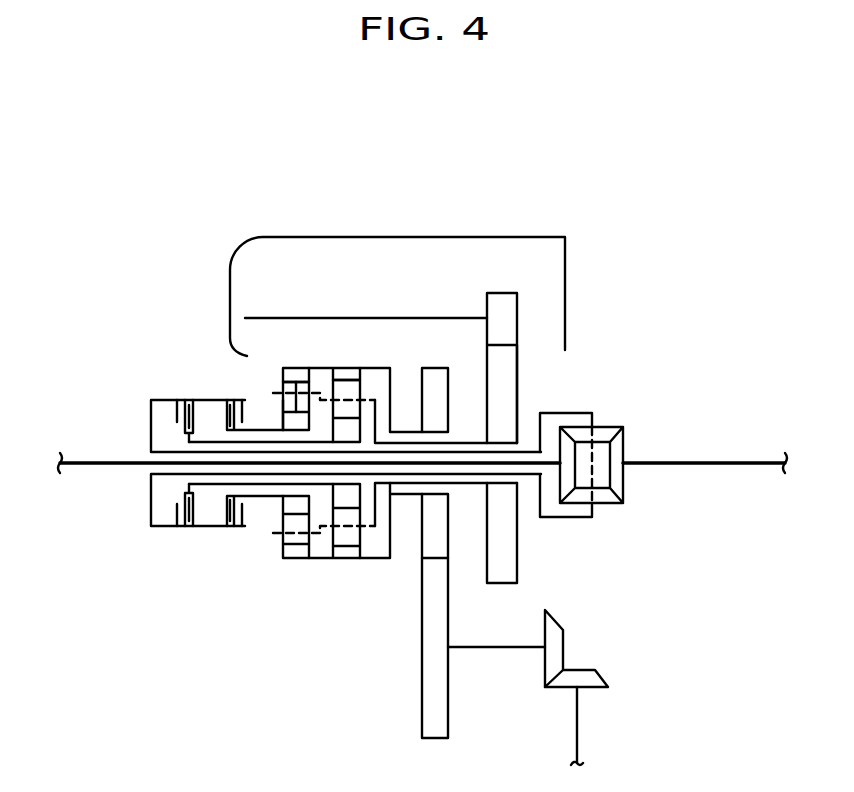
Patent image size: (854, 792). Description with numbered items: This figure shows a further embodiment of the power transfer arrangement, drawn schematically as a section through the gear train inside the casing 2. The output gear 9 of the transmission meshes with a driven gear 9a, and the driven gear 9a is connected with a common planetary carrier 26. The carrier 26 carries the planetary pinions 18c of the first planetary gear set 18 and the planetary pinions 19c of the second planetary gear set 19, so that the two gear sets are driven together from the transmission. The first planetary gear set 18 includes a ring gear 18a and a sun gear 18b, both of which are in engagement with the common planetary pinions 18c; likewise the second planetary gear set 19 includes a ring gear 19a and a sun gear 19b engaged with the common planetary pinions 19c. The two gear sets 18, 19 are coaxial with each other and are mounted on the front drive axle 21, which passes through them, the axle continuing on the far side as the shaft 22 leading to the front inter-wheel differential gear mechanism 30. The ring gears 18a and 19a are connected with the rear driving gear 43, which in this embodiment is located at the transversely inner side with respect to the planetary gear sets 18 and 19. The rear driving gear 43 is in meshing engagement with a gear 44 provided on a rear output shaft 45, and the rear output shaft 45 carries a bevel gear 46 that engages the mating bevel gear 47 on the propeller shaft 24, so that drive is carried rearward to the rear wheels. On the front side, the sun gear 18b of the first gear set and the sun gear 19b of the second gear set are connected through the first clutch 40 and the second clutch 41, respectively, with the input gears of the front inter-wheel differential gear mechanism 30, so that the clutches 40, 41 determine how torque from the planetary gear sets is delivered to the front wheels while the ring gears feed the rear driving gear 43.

The transmission casing 2 is at (450, 236).
The output gear 9 is at (505, 295).
The driven gear 9a is at (515, 402).
The first planetary gear set 18 is at (297, 350).
The ring gear 18a is at (293, 370).
The sun gear 18b is at (284, 417).
The planetary pinions 18c is at (303, 388).
The second planetary gear set 19 is at (363, 352).
The ring gear 19a is at (342, 370).
The sun gear 19b is at (377, 372).
The planetary pinions 19c is at (370, 400).
The front drive axle 21 is at (100, 468).
The output shaft 22 is at (722, 460).
The propeller shaft 24 is at (578, 745).
The common planetary carrier 26 is at (377, 412).
The front inter-wheel differential gear mechanism 30 is at (617, 427).
The first clutch 40 is at (230, 397).
The second clutch 41 is at (183, 398).
The rear driving gear 43 is at (426, 535).
The gear 44 is at (442, 728).
The rear output shaft 45 is at (496, 645).
The bevel gear 46 is at (560, 630).
The bevel gear 47 is at (593, 675).